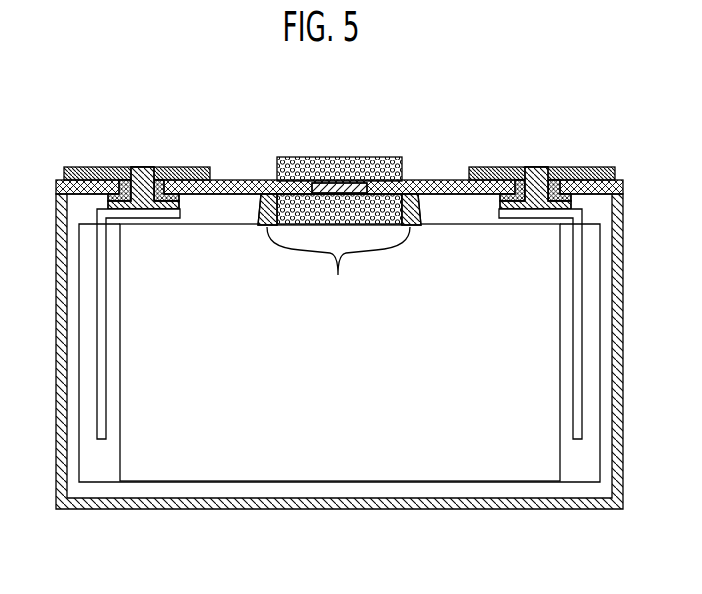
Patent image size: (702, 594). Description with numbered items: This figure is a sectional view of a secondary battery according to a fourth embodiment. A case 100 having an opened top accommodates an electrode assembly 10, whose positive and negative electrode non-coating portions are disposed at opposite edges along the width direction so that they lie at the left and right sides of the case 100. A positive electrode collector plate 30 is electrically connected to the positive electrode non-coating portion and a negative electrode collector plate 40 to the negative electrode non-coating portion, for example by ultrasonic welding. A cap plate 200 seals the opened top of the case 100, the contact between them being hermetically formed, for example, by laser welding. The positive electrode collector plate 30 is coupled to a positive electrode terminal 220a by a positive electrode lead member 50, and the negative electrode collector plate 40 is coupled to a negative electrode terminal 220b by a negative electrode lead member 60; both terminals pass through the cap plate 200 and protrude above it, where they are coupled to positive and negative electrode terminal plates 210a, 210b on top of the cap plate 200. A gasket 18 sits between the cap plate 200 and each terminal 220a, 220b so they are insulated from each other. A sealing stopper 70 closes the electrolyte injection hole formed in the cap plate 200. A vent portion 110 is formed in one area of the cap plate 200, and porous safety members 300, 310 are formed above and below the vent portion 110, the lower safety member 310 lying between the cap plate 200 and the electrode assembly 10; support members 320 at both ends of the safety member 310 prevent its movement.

The electrode assembly 10 is at (337, 381).
The gasket 18 is at (128, 166).
The positive electrode collector plate 30 is at (100, 472).
The negative electrode collector plate 40 is at (580, 472).
The positive electrode lead member 50 is at (100, 326).
The negative electrode lead member 60 is at (580, 327).
The sealing stopper 70 is at (250, 182).
The case 100 is at (345, 499).
The vent portion 110 is at (353, 183).
The cap plate 200 is at (438, 182).
The positive electrode terminal plate 210a is at (83, 166).
The negative electrode terminal plate 210b is at (593, 166).
The positive electrode terminal 220a is at (143, 166).
The negative electrode terminal 220b is at (540, 166).
The porous safety member 300 is at (318, 157).
The porous safety member 310 is at (410, 197).
The support member 320 is at (338, 265).